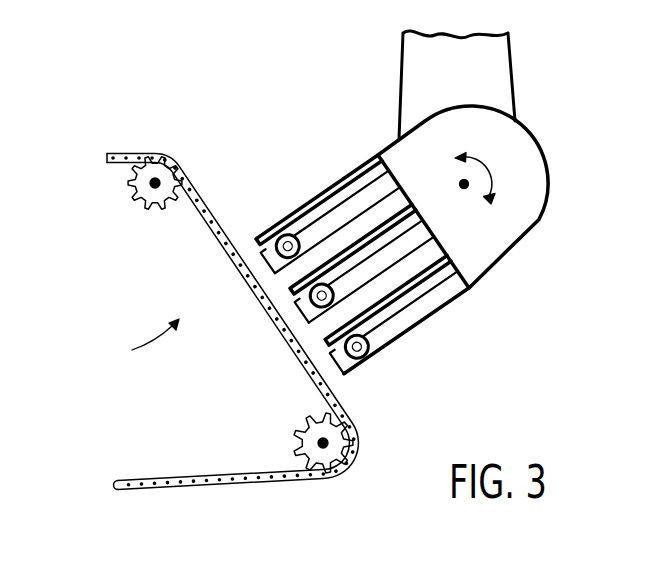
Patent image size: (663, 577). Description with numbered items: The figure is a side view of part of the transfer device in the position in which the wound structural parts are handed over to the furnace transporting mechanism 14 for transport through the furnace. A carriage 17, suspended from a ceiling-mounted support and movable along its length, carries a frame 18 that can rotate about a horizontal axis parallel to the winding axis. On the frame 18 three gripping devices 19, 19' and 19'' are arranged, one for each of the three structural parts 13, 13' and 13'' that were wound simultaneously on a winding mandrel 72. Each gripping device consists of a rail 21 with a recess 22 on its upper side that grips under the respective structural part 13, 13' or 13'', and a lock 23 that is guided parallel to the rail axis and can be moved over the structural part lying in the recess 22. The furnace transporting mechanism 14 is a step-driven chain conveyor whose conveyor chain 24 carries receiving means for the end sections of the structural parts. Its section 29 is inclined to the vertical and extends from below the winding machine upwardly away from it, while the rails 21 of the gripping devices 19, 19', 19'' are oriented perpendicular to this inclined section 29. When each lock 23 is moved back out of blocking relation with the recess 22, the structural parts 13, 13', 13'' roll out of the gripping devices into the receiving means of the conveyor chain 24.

The structural part 13 is at (296, 227).
The structural part 13' is at (313, 295).
The structural part 13'' is at (355, 342).
The furnace transporting mechanism 14 is at (142, 129).
The carriage 17 is at (497, 77).
The frame 18 is at (510, 163).
The gripping device 19 is at (319, 184).
The gripping device 19' is at (310, 261).
The gripping device 19'' is at (406, 322).
The rail 21 is at (420, 303).
The recess 22 is at (363, 354).
The lock 23 is at (322, 330).
The conveyor chain 24 is at (263, 489).
The inclined section 29 is at (140, 343).
The winding mandrel 72 is at (278, 236).